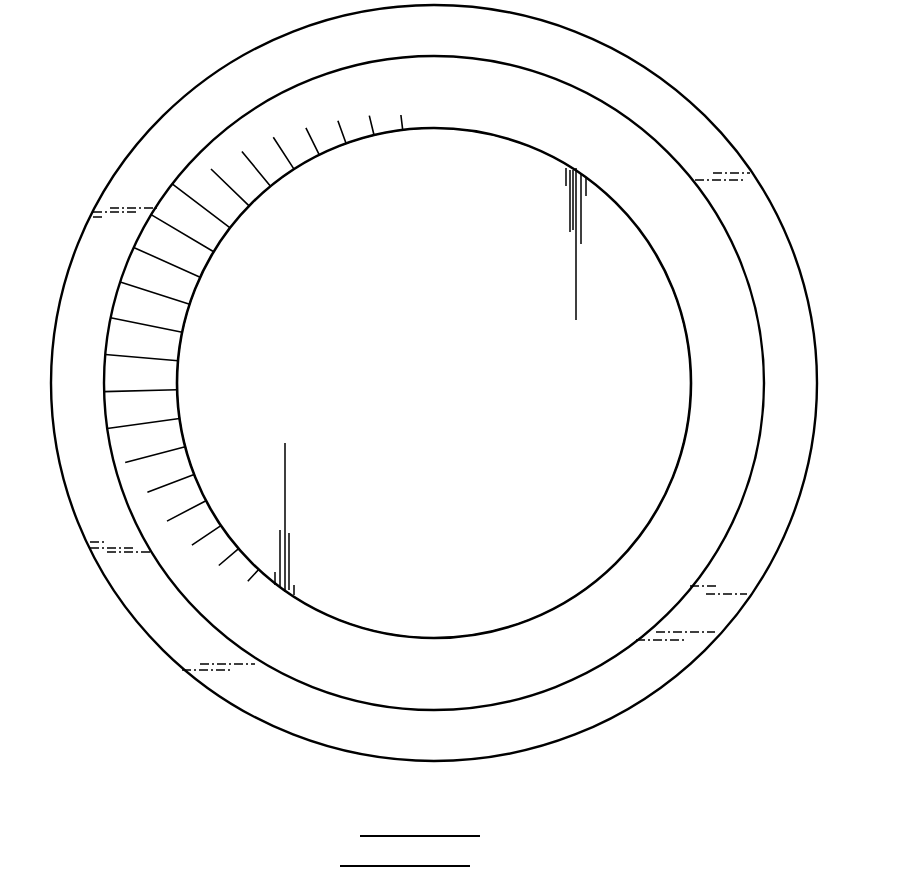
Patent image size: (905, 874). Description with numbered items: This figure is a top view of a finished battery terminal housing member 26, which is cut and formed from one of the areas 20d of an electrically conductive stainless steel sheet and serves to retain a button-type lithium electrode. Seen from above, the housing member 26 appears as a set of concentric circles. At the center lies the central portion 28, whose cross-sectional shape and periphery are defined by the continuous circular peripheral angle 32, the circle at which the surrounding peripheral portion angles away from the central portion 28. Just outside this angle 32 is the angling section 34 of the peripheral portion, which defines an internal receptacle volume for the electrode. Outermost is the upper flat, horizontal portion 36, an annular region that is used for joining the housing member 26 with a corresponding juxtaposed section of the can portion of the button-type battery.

The battery terminal housing member 26 is at (186, 42).
The upper flat horizontal portion 36 is at (663, 113).
The angling section 34 is at (527, 662).
The peripheral angle 32 is at (458, 130).
The central portion 28 is at (438, 397).
The area 20d is at (517, 209).